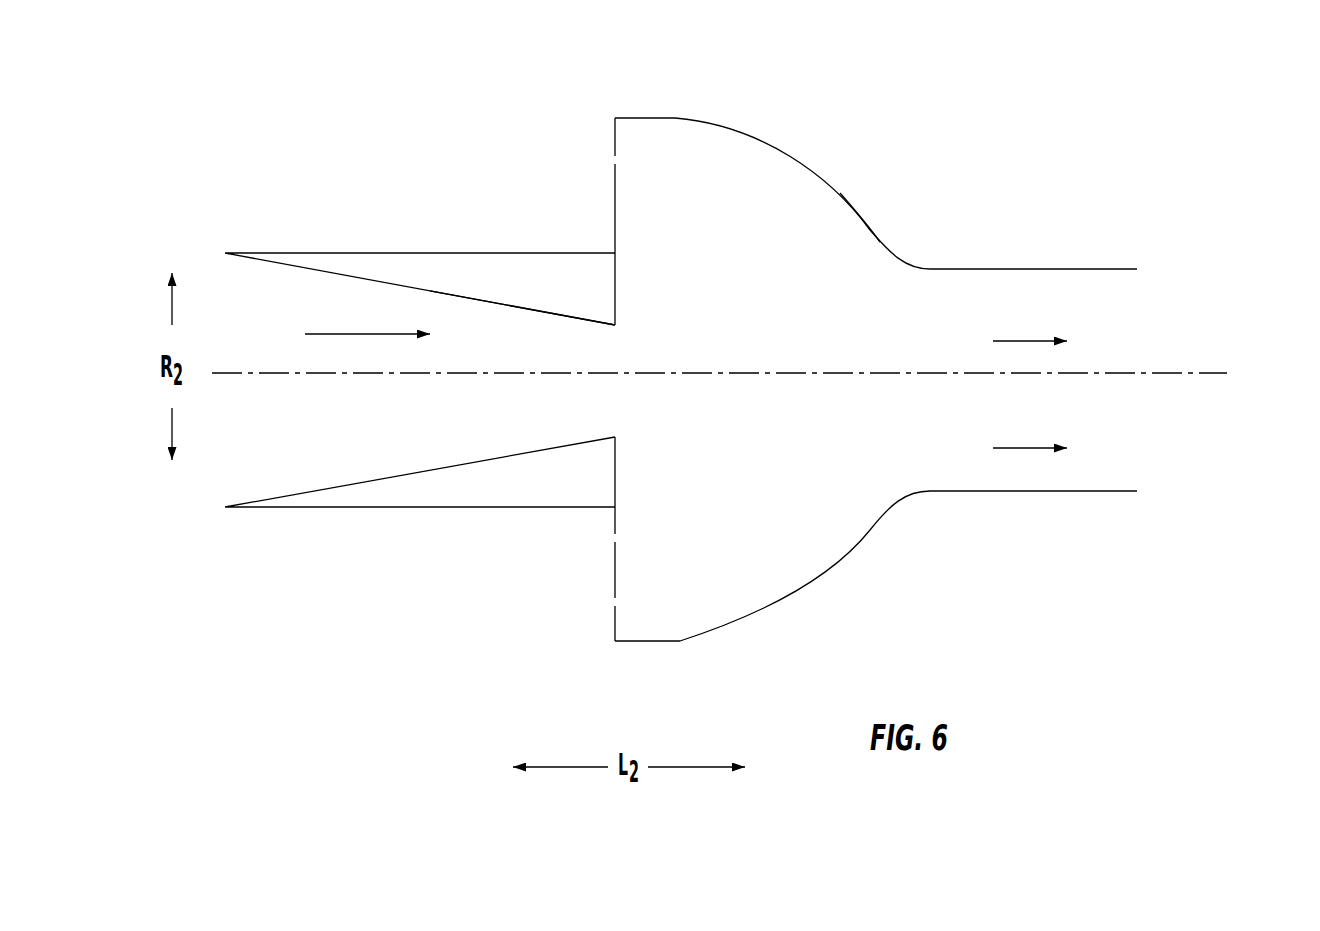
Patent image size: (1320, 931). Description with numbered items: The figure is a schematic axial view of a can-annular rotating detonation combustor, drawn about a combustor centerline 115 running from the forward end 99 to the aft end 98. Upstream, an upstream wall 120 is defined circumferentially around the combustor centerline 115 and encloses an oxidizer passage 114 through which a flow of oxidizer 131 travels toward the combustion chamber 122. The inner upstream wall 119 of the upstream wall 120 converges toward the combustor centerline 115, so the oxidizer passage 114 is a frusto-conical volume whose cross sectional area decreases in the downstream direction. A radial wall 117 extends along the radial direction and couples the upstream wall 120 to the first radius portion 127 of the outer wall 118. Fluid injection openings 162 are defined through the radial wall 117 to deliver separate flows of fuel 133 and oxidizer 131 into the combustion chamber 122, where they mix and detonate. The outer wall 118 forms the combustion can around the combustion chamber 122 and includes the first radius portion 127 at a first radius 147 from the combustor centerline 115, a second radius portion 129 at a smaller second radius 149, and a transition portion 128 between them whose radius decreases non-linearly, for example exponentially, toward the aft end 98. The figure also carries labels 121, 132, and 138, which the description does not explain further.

The aft end 98 is at (1283, 385).
The forward end 99 is at (115, 385).
The oxidizer passage 114 is at (485, 332).
The combustor centerline 115 is at (1175, 373).
The radial wall 117 is at (616, 233).
The outer wall 118 is at (800, 161).
The inner upstream wall 119 is at (524, 308).
The upstream wall 120 is at (291, 253).
The lower centerbody portion 121 is at (612, 501).
The combustion chamber 122 is at (765, 365).
The first radius portion 127 is at (678, 114).
The transition portion 128 is at (870, 211).
The second radius portion 129 is at (1075, 267).
The flow of oxidizer 131 is at (612, 223).
The recirculating flow 132 is at (630, 179).
The flow of fuel 133 is at (612, 158).
The exhaust flow 138 is at (1024, 448).
The first radius 147 is at (622, 118).
The second radius 149 is at (1053, 269).
The fluid injection opening 162 is at (624, 163).